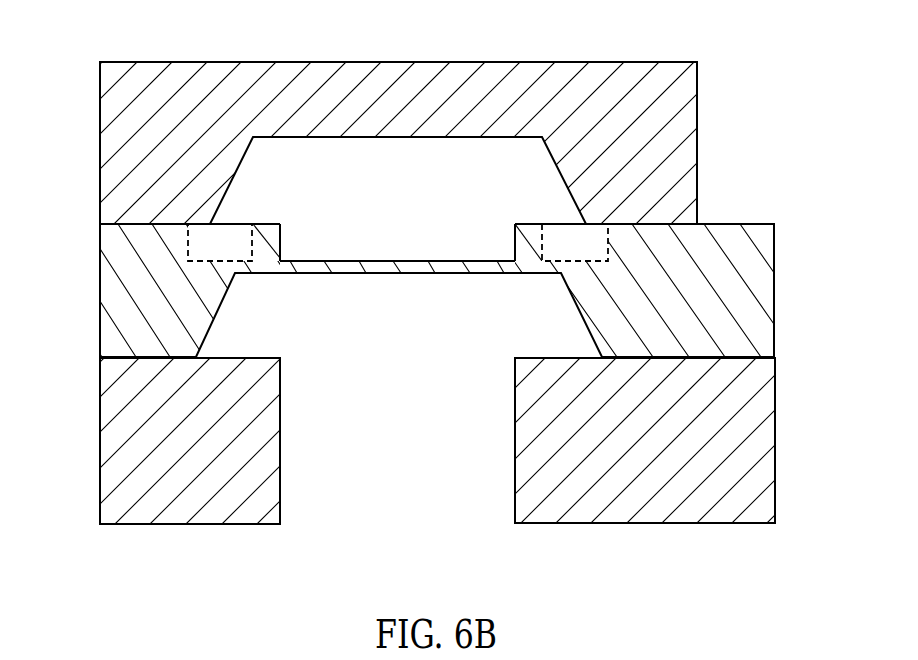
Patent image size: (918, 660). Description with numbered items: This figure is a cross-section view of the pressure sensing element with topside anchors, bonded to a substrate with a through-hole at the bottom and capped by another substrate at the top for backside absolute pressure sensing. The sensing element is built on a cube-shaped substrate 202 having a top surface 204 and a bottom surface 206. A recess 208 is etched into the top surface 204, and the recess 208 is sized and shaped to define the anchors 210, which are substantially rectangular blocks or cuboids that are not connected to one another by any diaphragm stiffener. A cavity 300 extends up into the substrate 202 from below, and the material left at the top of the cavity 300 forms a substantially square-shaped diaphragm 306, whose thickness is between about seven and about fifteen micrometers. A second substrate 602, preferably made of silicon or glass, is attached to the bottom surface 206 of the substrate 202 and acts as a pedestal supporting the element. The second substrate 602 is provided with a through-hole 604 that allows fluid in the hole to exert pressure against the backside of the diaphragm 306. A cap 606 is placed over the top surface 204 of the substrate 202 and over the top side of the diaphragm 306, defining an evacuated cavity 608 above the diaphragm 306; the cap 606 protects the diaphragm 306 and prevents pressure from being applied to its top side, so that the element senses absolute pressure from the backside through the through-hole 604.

The cap 606 is at (183, 70).
The evacuated cavity 608 is at (418, 150).
The top surface 204 is at (127, 224).
The substrate 202 is at (774, 290).
The bottom surface 206 is at (123, 357).
The recess 208 is at (242, 230).
The anchors 210 is at (272, 222).
The diaphragm 306 is at (437, 259).
The second substrate 602 is at (774, 453).
The through-hole 604 is at (350, 455).
The cavity 300 is at (401, 335).